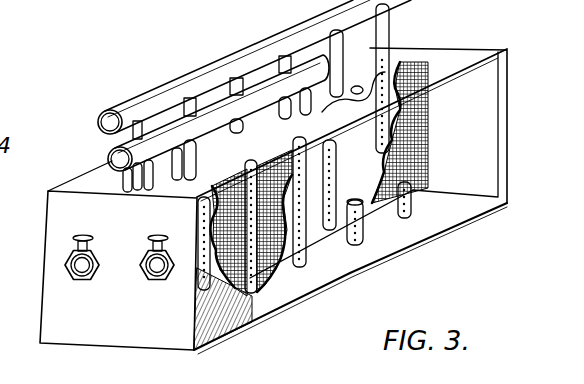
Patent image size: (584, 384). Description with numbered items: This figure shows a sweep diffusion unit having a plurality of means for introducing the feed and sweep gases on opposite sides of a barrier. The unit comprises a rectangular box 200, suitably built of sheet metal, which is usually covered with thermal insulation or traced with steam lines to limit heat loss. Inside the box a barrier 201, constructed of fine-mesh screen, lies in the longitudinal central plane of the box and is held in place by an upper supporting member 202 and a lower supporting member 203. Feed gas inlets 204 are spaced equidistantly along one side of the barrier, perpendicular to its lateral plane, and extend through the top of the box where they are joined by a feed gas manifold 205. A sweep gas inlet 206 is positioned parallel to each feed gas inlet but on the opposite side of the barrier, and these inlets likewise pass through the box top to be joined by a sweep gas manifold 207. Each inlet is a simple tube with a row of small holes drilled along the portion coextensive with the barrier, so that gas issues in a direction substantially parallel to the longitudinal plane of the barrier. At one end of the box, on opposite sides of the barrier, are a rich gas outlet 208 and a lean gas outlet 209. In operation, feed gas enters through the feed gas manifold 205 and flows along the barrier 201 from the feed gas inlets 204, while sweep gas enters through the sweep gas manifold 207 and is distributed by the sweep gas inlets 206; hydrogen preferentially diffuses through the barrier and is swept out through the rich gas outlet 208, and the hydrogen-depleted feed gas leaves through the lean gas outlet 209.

The rectangular box 200 is at (46, 272).
The barrier 201 is at (424, 53).
The upper supporting member 202 is at (431, 84).
The lower supporting member 203 is at (423, 193).
The feed gas inlets 204 is at (151, 176).
The feed gas manifold 205 is at (199, 78).
The sweep gas inlet 206 is at (208, 145).
The sweep gas manifold 207 is at (234, 57).
The rich gas outlet 208 is at (77, 283).
The lean gas outlet 209 is at (153, 283).